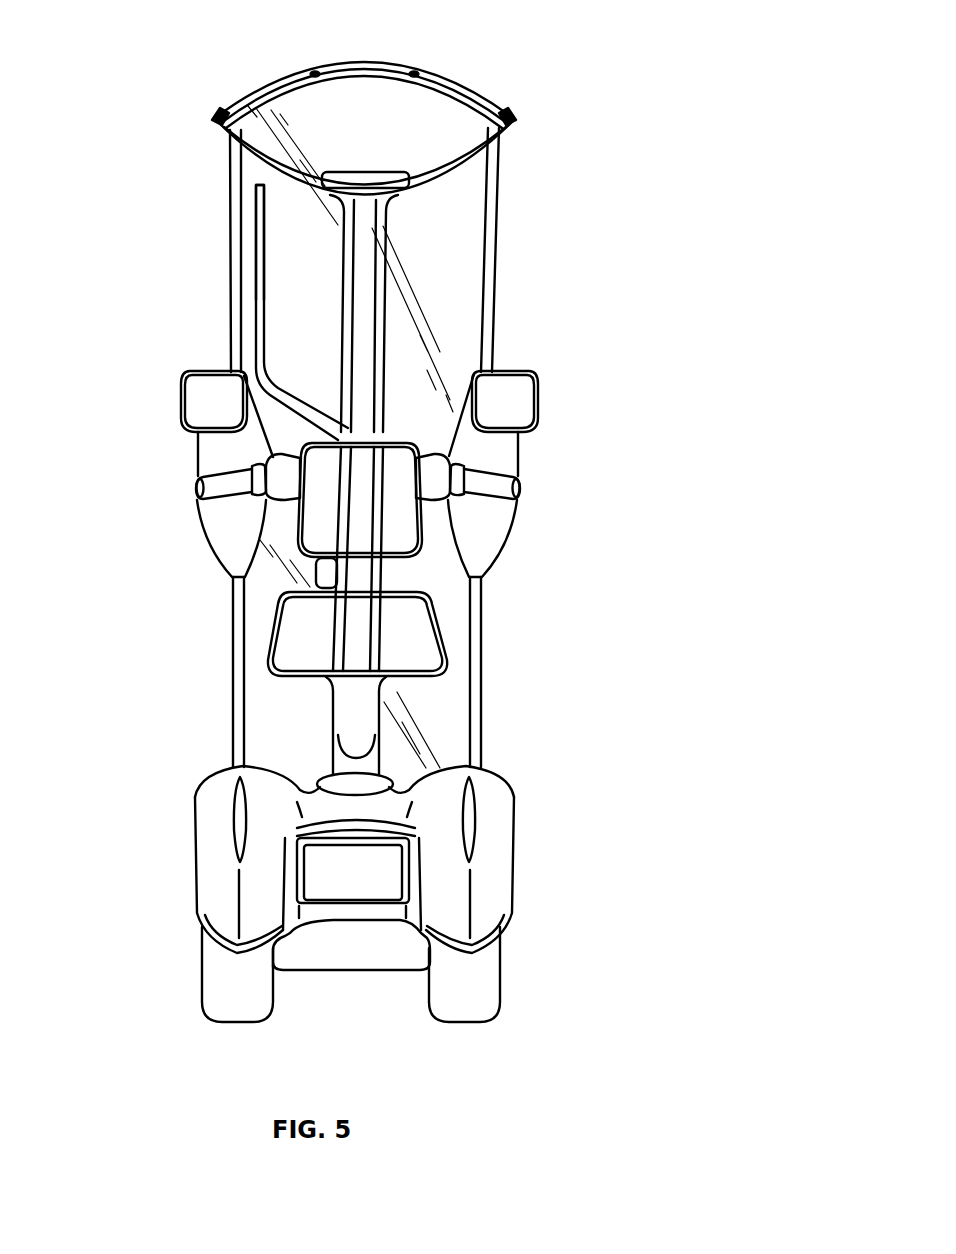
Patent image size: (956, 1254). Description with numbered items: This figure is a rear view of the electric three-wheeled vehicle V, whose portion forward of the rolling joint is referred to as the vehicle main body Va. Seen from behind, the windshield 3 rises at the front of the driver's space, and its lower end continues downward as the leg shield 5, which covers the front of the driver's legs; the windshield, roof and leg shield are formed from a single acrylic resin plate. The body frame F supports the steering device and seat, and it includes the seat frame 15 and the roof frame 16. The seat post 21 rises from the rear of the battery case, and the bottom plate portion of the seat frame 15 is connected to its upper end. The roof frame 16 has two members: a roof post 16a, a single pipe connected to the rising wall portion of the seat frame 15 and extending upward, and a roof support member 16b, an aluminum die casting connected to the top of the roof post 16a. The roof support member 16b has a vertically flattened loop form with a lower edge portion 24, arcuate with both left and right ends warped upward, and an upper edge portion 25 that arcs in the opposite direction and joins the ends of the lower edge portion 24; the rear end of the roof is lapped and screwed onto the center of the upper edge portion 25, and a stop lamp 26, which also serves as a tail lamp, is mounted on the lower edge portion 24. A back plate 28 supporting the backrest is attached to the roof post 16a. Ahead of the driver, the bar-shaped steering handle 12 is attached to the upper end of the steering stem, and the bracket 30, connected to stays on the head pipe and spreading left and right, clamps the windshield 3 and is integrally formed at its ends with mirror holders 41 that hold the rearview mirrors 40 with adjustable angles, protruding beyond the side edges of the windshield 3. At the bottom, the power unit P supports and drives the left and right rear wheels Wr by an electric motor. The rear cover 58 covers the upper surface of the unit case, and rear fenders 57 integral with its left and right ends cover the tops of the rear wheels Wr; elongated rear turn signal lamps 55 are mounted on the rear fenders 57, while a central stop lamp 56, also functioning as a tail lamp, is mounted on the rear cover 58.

The windshield 3 is at (452, 297).
The leg shield 5 is at (442, 693).
The steering handle 12 is at (500, 484).
The seat frame 15 is at (300, 632).
The roof frame 16 is at (143, 207).
The roof post 16a is at (340, 280).
The roof support member 16b is at (288, 203).
The seat post 21 is at (352, 710).
The lower edge portion 24 is at (268, 118).
The upper edge portion 25 is at (340, 80).
The stop lamp 26 is at (373, 178).
The back plate 28 is at (322, 528).
The bracket 30 is at (470, 432).
The rearview mirror 40 is at (203, 393).
The mirror holder 41 is at (180, 410).
The rear turn signal lamp 55 is at (238, 802).
The stop lamp 56 is at (367, 787).
The rear fender 57 is at (218, 880).
The rear cover 58 is at (355, 810).
The body frame F is at (386, 291).
The power unit P is at (523, 845).
The electric three-wheeled vehicle V is at (594, 208).
The vehicle main body Va is at (514, 334).
The rear wheel Wr is at (218, 985).